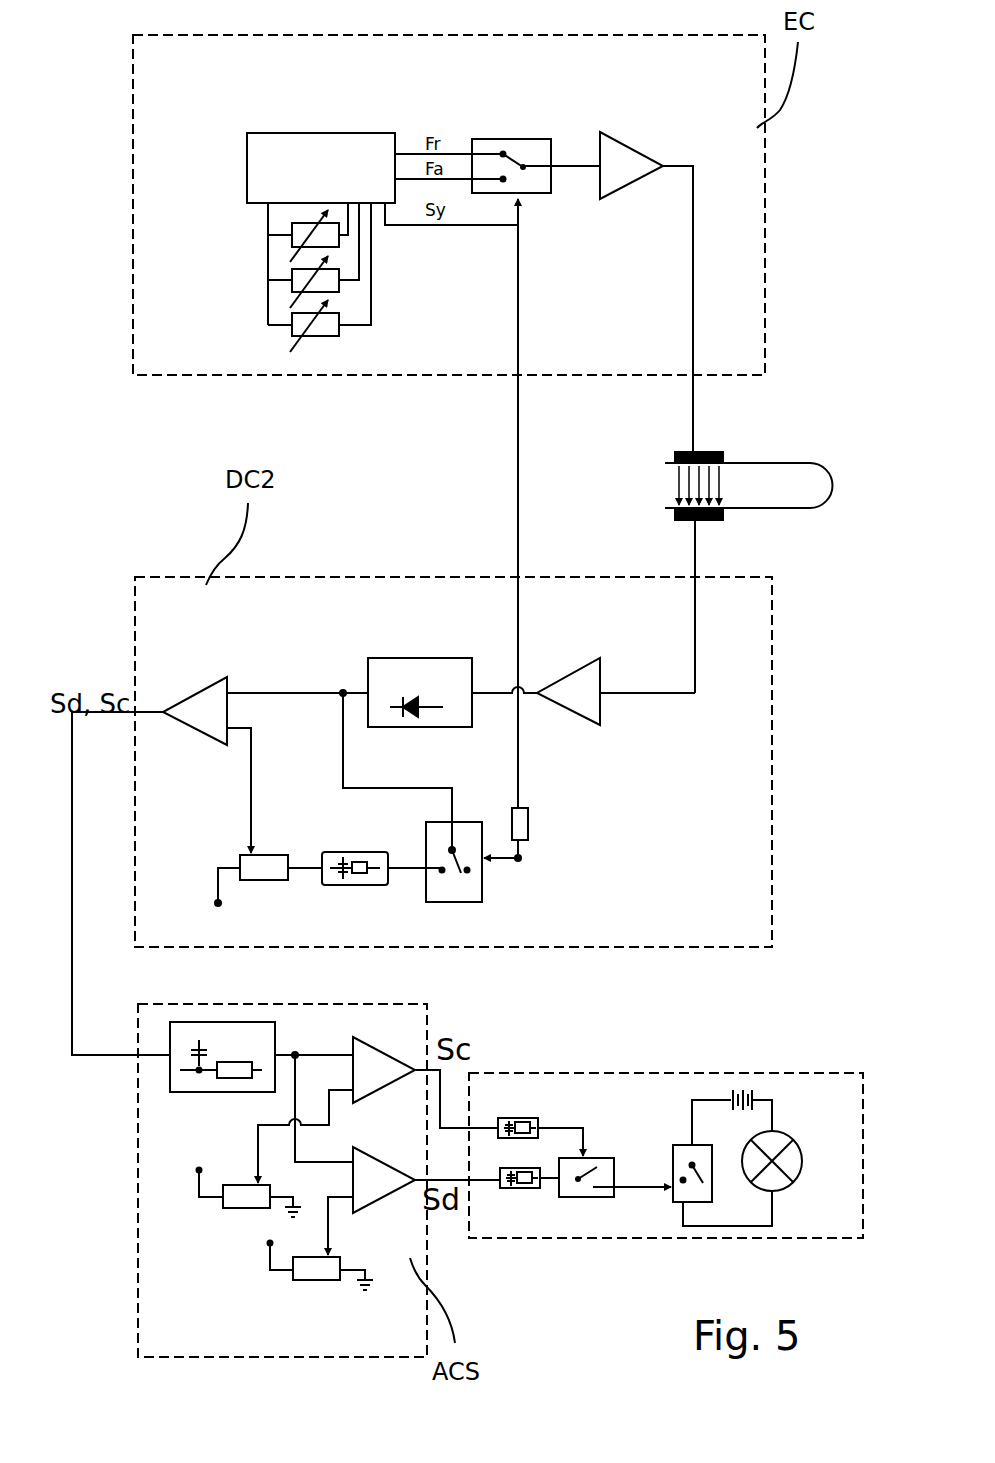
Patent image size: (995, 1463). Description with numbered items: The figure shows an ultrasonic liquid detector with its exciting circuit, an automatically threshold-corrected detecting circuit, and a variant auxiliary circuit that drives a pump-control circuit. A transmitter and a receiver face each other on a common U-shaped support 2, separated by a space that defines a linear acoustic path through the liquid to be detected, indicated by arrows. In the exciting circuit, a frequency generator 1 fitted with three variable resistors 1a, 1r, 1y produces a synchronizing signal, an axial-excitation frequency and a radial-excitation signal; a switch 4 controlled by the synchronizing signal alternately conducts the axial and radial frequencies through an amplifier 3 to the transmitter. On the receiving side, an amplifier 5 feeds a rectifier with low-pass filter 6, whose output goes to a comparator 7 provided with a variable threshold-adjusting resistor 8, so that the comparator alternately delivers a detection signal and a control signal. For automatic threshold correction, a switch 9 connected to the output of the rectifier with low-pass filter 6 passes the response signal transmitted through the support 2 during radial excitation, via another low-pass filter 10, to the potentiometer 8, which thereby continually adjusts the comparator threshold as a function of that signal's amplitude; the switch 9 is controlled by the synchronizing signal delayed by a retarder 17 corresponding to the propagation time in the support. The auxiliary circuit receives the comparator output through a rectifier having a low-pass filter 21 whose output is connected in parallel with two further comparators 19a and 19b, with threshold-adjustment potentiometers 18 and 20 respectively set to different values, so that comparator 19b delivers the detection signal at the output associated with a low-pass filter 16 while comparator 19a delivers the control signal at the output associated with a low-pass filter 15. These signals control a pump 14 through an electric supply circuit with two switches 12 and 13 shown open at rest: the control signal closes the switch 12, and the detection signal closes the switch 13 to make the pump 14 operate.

The frequency generator 1 is at (330, 133).
The variable resistor 1a is at (290, 237).
The variable resistor 1r is at (290, 283).
The variable resistor 1y is at (290, 329).
The U-shaped support 2 is at (752, 463).
The amplifier 3 is at (620, 148).
The switch 4 is at (545, 139).
The amplifier 5 is at (571, 672).
The rectifier with low-pass filter 6 is at (428, 668).
The comparator 7 is at (195, 710).
The variable threshold-adjusting resistor 8 is at (280, 860).
The switch 9 is at (468, 832).
The low-pass filter 10 is at (372, 863).
The switch 12 is at (560, 1190).
The switch 13 is at (673, 1200).
The pump 14 is at (780, 1180).
The low-pass filter 15 is at (530, 1128).
The low-pass filter 16 is at (512, 1190).
The retarder 17 is at (520, 820).
The threshold-adjustment potentiometer 18 is at (240, 1205).
The comparator 19a is at (380, 1060).
The comparator 19b is at (370, 1172).
The threshold-adjustment potentiometer 20 is at (308, 1280).
The rectifier having a low-pass filter 21 is at (237, 1046).